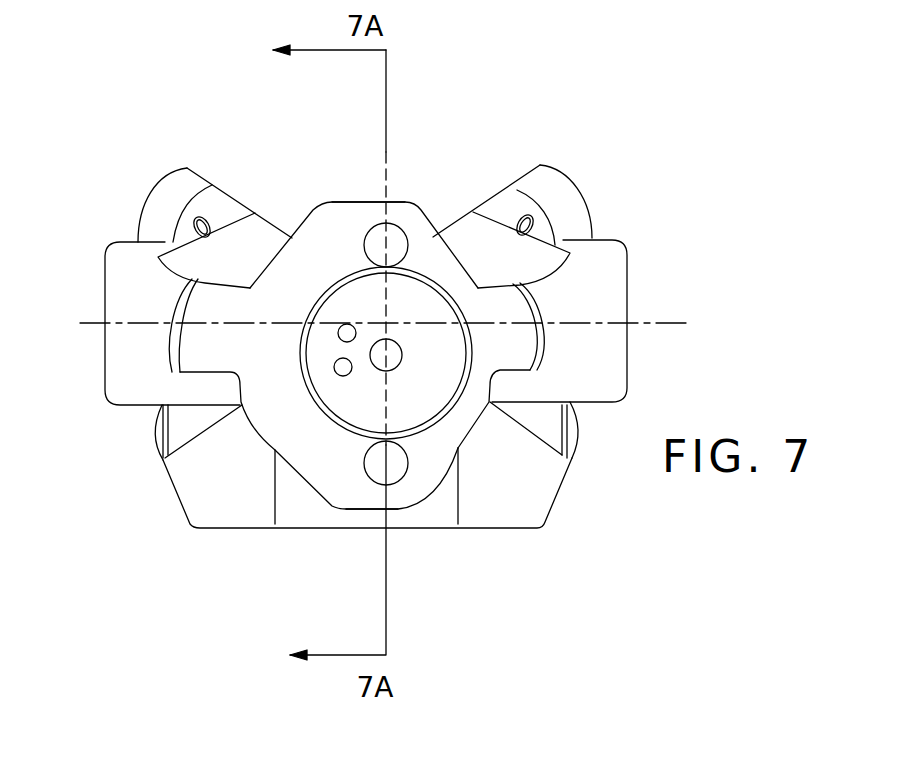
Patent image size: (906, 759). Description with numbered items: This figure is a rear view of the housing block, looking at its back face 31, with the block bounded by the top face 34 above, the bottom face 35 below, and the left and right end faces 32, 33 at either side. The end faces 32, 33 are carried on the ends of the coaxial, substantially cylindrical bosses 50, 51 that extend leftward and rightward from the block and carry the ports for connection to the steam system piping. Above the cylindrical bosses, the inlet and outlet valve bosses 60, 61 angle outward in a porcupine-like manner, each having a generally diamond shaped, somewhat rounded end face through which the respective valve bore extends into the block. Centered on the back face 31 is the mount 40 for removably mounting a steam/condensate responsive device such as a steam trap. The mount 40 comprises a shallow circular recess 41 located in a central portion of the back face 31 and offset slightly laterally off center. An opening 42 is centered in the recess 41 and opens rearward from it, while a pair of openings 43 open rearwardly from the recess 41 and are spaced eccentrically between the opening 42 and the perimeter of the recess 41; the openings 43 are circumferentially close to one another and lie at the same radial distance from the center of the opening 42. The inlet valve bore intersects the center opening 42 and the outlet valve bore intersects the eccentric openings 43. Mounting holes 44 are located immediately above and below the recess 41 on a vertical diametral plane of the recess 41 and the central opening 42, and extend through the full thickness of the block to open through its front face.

The back face 31 is at (317, 205).
The end face 32 is at (627, 283).
The end face 33 is at (105, 268).
The top face 34 is at (350, 202).
The bottom face 35 is at (440, 528).
The mount 40 is at (366, 505).
The circular recess 41 is at (460, 370).
The opening 42 is at (400, 348).
The openings 43 is at (345, 326).
The mounting holes 44 is at (397, 233).
The boss 50 is at (613, 258).
The boss 51 is at (120, 255).
The inlet valve boss 60 is at (533, 187).
The outlet valve boss 61 is at (183, 172).